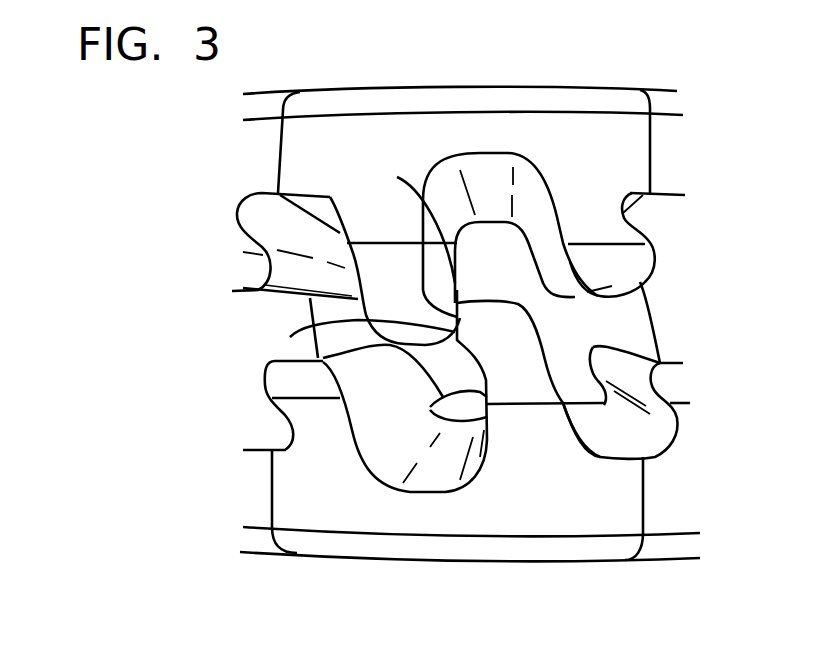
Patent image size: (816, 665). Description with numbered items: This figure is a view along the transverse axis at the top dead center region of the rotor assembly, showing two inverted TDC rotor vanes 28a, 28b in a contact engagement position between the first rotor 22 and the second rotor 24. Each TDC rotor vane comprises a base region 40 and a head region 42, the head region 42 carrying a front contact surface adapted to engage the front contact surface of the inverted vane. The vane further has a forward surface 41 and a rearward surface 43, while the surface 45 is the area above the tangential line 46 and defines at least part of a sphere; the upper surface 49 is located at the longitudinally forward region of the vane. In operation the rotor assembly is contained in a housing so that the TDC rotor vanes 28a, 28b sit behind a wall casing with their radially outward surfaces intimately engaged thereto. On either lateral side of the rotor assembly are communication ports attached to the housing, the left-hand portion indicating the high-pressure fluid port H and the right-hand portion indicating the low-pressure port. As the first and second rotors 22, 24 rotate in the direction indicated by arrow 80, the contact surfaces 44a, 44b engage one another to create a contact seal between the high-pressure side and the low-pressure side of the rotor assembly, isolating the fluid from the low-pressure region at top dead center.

The first rotor 22 is at (340, 547).
The second rotor 24 is at (331, 128).
The TDC rotor vane 28a is at (611, 226).
The inverted TDC rotor vane 28b is at (410, 287).
The base region 40 is at (545, 513).
The forward surface 41 is at (430, 407).
The head region 42 is at (518, 224).
The rearward surface 43 is at (723, 310).
The front contact surface 44a is at (423, 262).
The front contact surface 44b is at (300, 333).
The spherical surface 45 is at (528, 451).
The tangential line 46 is at (440, 469).
The upper surface 49 is at (411, 221).
The arrow 80 is at (590, 594).
The high-pressure fluid port H is at (221, 338).